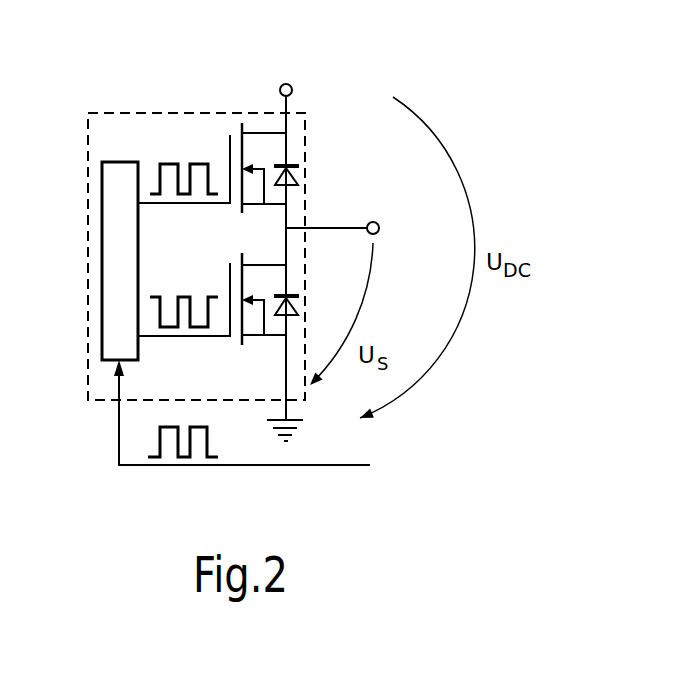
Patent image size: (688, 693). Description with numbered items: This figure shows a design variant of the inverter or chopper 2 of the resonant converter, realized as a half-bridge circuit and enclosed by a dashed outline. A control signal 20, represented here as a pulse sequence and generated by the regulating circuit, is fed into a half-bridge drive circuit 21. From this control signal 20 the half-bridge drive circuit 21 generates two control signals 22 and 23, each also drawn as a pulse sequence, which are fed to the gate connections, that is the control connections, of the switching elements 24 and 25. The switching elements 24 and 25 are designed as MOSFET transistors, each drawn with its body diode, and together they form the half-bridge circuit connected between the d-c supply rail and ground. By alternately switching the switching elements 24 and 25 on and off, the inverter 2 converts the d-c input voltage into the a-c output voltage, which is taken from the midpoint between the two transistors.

The inverter or chopper 2 is at (200, 112).
The control signal 20 is at (207, 444).
The half-bridge drive circuit 21 is at (102, 179).
The control signal 22 is at (200, 163).
The control signal 23 is at (217, 297).
The switching element 24 is at (260, 158).
The switching element 25 is at (260, 288).